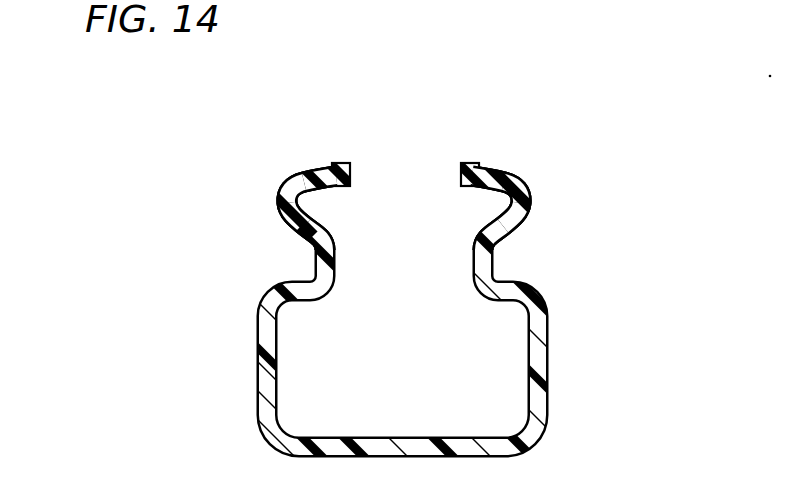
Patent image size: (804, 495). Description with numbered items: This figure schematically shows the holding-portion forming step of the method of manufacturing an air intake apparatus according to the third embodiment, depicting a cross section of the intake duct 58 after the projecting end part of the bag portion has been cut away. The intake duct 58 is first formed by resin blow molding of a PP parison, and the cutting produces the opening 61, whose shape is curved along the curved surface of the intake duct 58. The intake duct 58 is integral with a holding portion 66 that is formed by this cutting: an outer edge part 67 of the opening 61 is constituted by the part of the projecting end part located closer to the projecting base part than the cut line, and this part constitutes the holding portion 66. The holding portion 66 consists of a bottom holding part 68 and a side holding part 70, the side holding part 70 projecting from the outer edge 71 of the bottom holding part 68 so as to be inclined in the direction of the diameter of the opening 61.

The intake duct 58 is at (548, 355).
The opening 61 is at (405, 200).
The holding portion 66 is at (280, 191).
The outer edge part 67 is at (302, 165).
The bottom holding part 68 is at (305, 229).
The side holding part 70 is at (295, 189).
The outer edge 71 is at (283, 217).